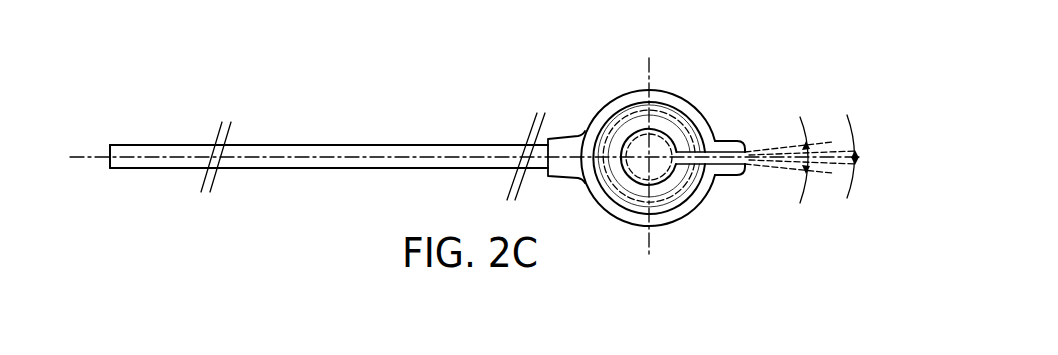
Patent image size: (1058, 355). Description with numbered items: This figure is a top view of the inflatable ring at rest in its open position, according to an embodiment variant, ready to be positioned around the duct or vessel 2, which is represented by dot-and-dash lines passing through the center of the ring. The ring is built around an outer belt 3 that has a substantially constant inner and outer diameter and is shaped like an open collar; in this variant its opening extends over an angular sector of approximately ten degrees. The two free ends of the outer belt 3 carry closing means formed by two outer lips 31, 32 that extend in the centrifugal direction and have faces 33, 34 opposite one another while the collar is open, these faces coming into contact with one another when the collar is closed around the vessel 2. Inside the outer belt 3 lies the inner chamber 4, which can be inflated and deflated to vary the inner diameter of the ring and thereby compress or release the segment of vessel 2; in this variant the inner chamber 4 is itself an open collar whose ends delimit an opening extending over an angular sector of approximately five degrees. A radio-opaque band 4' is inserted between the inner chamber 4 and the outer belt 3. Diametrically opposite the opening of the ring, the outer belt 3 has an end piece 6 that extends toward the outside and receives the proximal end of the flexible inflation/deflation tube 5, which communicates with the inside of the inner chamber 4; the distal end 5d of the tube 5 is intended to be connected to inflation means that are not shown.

The duct/vessel 2 is at (658, 186).
The outer belt 3 is at (678, 98).
The outer lip 31 is at (729, 139).
The outer lip 32 is at (730, 180).
The face 33 is at (747, 152).
The face 34 is at (748, 164).
The inner chamber 4 is at (642, 192).
The radio-opaque band 4' is at (626, 134).
The flexible inflation/deflation tube 5 is at (385, 150).
The distal end 5d is at (109, 160).
The end piece 6 is at (567, 180).